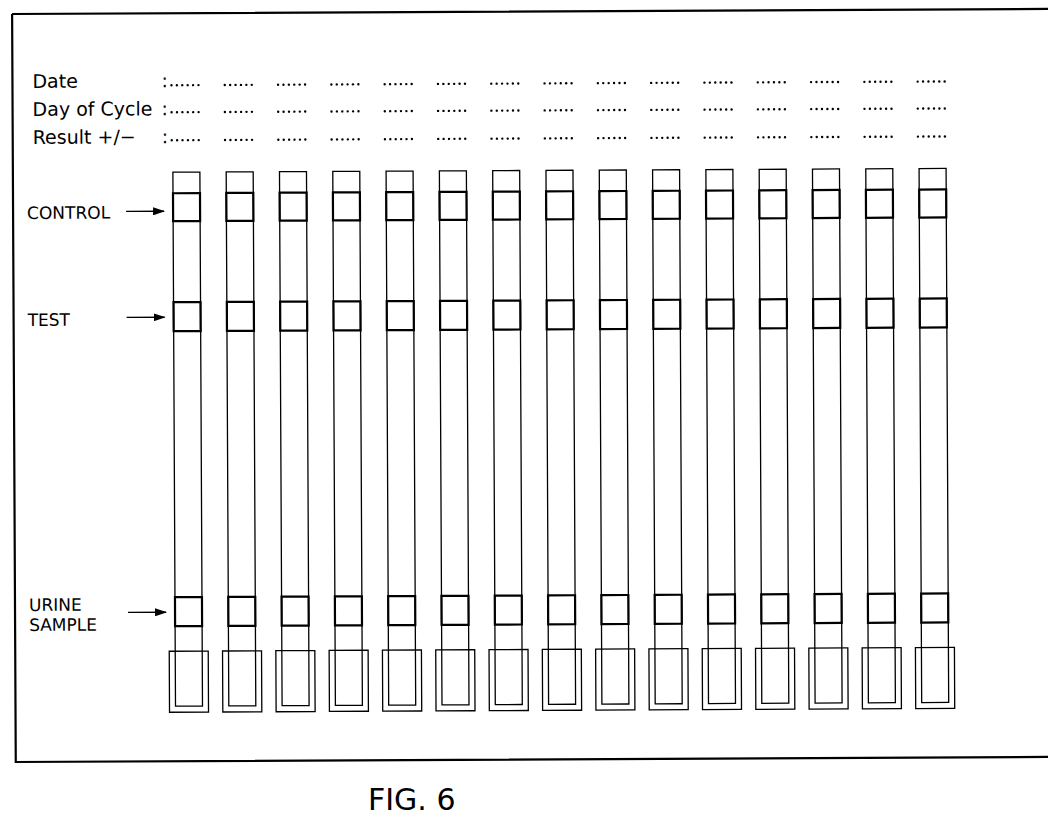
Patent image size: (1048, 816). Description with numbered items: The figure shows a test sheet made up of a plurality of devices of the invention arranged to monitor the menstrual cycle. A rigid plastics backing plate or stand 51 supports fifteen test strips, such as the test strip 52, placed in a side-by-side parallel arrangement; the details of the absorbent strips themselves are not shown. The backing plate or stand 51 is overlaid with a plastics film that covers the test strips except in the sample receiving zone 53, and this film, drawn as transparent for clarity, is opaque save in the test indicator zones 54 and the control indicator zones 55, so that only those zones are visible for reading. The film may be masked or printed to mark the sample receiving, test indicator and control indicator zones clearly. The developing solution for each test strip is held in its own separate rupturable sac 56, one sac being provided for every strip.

The backing plate 51 is at (987, 735).
The test strip 52 is at (963, 435).
The sample receiving zone 53 is at (964, 607).
The test indicator zone 54 is at (963, 312).
The control indicator zone 55 is at (962, 203).
The rupturable sac 56 is at (961, 677).